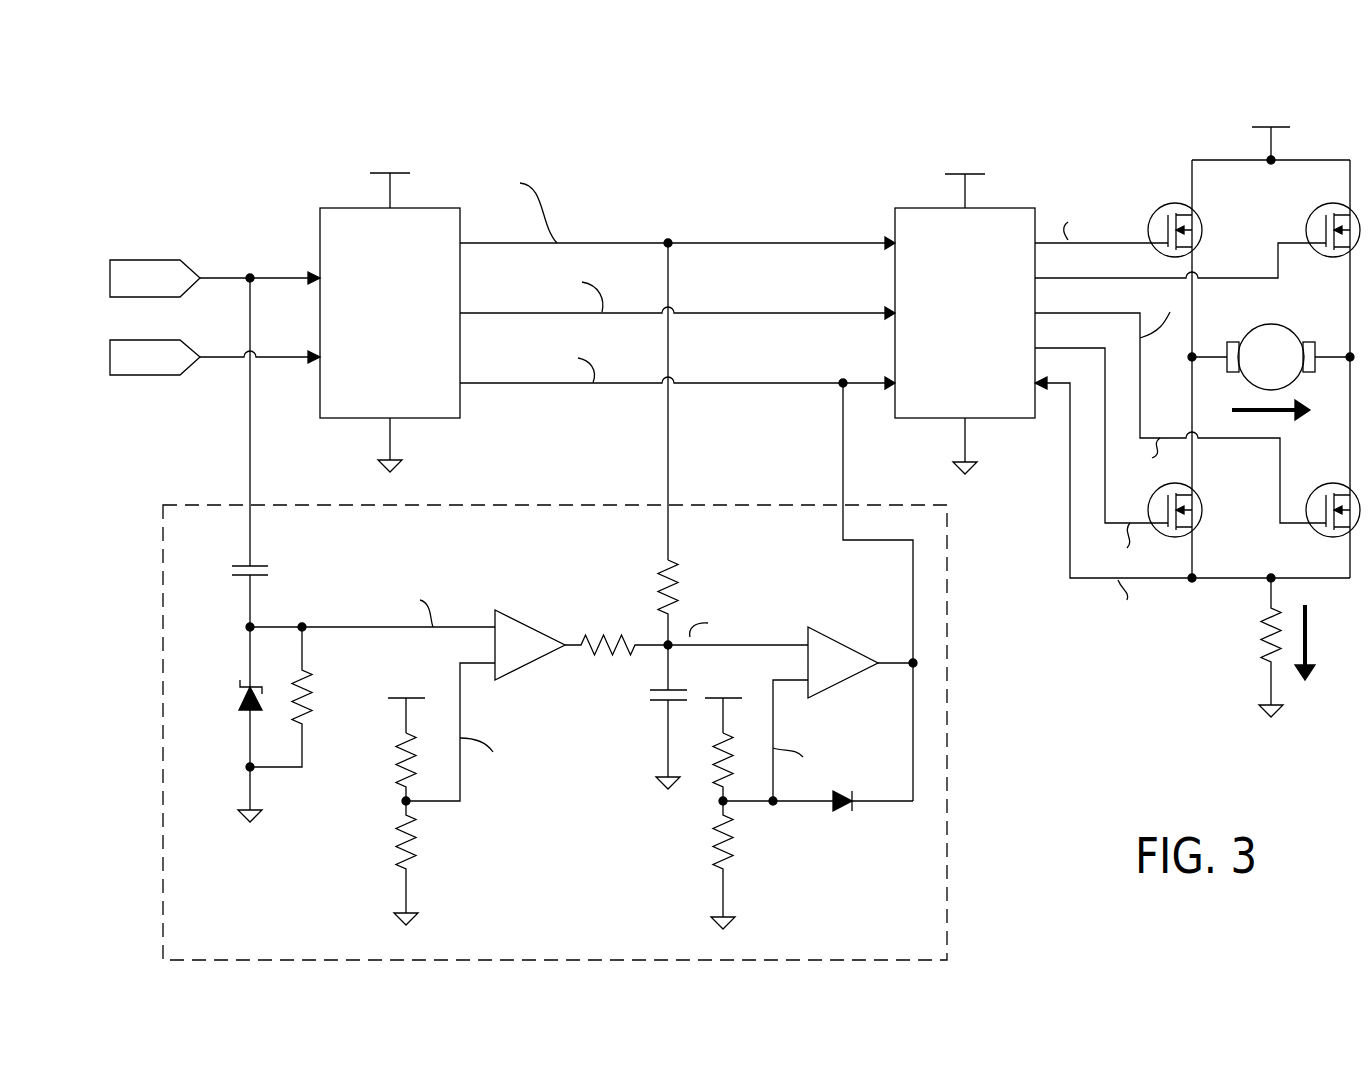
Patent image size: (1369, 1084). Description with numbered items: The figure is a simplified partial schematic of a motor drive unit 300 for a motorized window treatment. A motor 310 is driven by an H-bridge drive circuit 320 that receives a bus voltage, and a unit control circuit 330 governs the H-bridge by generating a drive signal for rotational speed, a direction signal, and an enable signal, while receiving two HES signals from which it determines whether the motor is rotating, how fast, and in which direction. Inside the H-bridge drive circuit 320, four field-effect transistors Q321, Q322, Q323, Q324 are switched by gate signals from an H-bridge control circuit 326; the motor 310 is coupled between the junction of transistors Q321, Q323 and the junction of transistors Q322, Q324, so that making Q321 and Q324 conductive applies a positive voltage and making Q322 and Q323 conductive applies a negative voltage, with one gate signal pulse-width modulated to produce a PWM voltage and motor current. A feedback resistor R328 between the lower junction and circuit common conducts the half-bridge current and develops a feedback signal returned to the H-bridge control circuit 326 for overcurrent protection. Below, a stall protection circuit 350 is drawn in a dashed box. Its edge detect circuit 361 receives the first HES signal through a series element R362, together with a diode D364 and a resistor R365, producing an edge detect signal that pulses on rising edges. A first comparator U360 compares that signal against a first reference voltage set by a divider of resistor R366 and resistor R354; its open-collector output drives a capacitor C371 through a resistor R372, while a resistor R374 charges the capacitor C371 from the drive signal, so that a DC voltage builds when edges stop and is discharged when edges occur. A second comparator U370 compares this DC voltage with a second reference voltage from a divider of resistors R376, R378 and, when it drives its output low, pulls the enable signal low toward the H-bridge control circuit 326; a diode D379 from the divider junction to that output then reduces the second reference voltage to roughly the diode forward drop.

The motor drive unit 300 is at (359, 101).
The unit control circuit 330 is at (347, 245).
The H-bridge control circuit 326 is at (913, 225).
The H-bridge drive circuit 320 is at (1109, 126).
The motor 310 is at (1283, 362).
The stall protection circuit 350 is at (947, 785).
The edge detect circuit 361 is at (313, 569).
The field-effect transistor Q321 is at (1163, 222).
The field-effect transistor Q322 is at (1323, 212).
The field-effect transistor Q323 is at (1192, 508).
The field-effect transistor Q324 is at (1318, 528).
The feedback resistor R328 is at (1265, 636).
The resistor R362 is at (240, 577).
The diode D364 is at (242, 700).
The resistor R365 is at (350, 660).
The first comparator U360 is at (522, 636).
The resistor R372 is at (617, 637).
The resistor R374 is at (675, 568).
The capacitor C371 is at (657, 703).
The resistor R366 is at (398, 747).
The resistor R354 is at (408, 847).
The resistor R376 is at (712, 772).
The resistor R378 is at (740, 852).
The second comparator U370 is at (843, 655).
The diode D379 is at (838, 813).